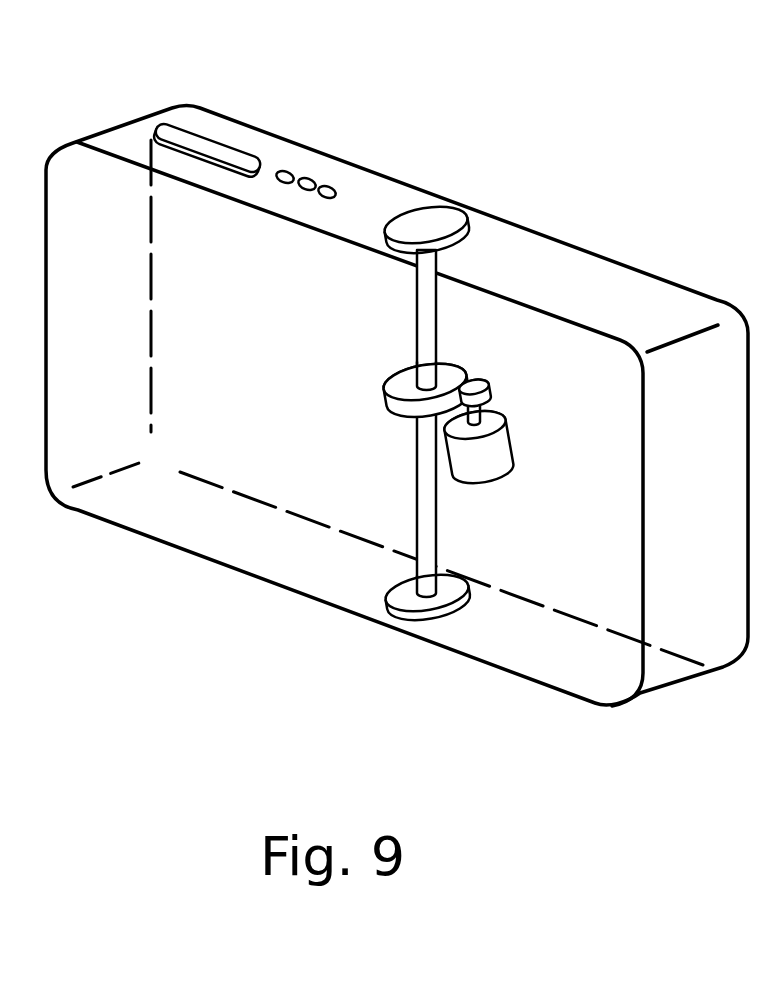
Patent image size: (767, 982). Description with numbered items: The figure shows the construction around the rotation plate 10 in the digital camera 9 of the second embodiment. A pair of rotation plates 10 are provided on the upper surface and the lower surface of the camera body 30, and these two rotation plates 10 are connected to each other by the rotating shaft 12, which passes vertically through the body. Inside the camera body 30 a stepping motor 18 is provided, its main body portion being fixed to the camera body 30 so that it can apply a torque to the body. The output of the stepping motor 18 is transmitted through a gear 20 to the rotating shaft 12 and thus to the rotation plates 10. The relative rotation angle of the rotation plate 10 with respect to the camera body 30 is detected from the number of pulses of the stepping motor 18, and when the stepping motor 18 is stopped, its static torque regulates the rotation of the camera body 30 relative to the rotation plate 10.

The digital camera 9 is at (477, 130).
The rotation plate 10 is at (432, 212).
The rotating shaft 12 is at (420, 488).
The stepping motor 18 is at (495, 455).
The gear 20 is at (478, 382).
The camera body 30 is at (677, 295).